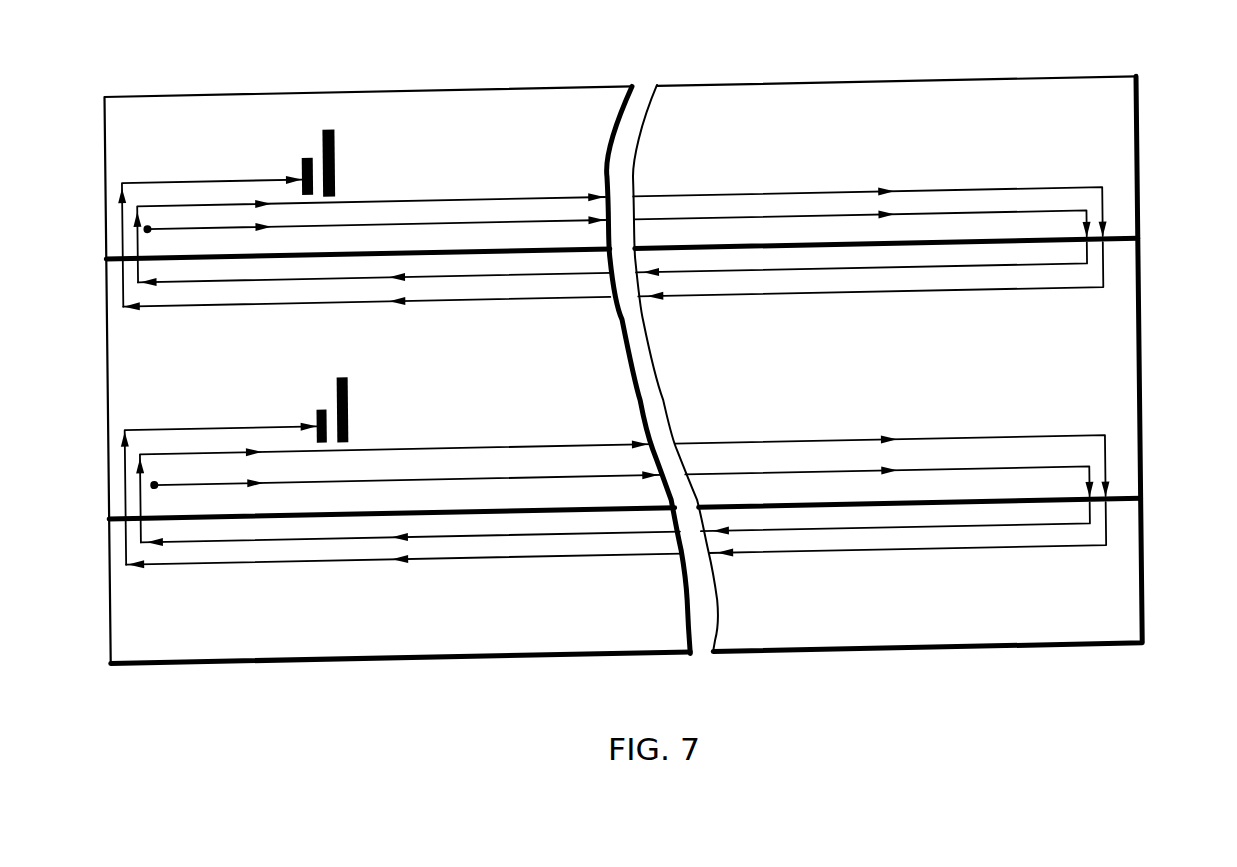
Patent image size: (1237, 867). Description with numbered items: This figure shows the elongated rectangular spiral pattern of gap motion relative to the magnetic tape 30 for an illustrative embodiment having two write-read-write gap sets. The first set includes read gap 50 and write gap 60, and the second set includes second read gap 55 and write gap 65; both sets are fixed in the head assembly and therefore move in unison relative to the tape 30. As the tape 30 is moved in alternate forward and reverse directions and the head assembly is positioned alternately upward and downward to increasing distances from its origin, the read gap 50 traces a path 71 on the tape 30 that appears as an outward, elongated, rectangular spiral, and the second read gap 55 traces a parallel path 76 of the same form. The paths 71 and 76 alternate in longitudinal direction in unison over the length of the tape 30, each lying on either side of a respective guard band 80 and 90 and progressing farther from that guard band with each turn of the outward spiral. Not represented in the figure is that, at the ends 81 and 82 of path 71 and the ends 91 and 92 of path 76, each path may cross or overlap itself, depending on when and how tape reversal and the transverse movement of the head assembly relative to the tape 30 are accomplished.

The tape 30 is at (753, 368).
The read gap 50 is at (306, 162).
The second read gap 55 is at (317, 414).
The write gap 60 is at (334, 141).
The write gap 65 is at (345, 388).
The path 71 is at (197, 184).
The path 76 is at (208, 431).
The guard band 80 is at (1136, 254).
The end 81 is at (121, 288).
The end 82 is at (1101, 290).
The guard band 90 is at (1136, 514).
The end 91 is at (122, 548).
The end 92 is at (1103, 543).